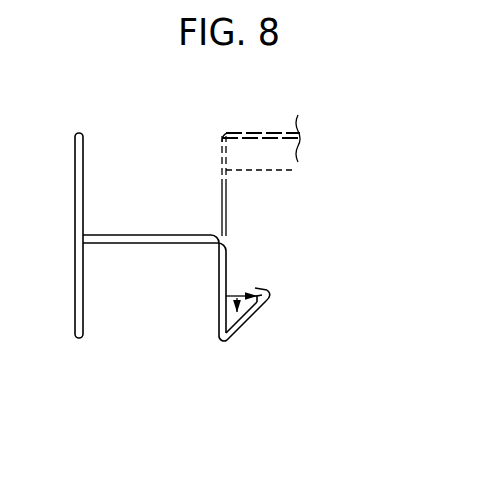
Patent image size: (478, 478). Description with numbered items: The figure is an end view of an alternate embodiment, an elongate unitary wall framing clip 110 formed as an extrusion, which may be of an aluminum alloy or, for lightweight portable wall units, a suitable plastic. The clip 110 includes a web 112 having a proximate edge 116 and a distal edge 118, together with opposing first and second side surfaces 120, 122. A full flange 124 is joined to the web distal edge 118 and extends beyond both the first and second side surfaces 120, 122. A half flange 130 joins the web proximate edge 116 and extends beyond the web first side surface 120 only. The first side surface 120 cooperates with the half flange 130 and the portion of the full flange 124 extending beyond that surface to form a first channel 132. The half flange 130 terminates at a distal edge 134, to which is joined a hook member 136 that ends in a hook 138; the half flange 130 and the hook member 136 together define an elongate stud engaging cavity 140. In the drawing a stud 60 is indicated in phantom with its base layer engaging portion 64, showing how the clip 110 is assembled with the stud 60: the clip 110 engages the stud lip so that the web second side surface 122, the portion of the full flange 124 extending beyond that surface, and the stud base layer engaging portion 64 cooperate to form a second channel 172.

The wall framing clip 110 is at (169, 287).
The web 112 is at (150, 235).
The proximate edge 116 is at (226, 221).
The distal edge 118 is at (100, 235).
The first side surface 120 is at (110, 244).
The second side surface 122 is at (183, 235).
The full flange 124 is at (80, 198).
The half flange 130 is at (222, 268).
The first channel 132 is at (163, 262).
The distal edge 134 is at (223, 343).
The hook member 136 is at (250, 322).
The hook 138 is at (270, 291).
The stud engaging cavity 140 is at (244, 290).
The second channel 172 is at (173, 207).
The stud 60 is at (258, 132).
The base layer engaging portion 64 is at (272, 172).